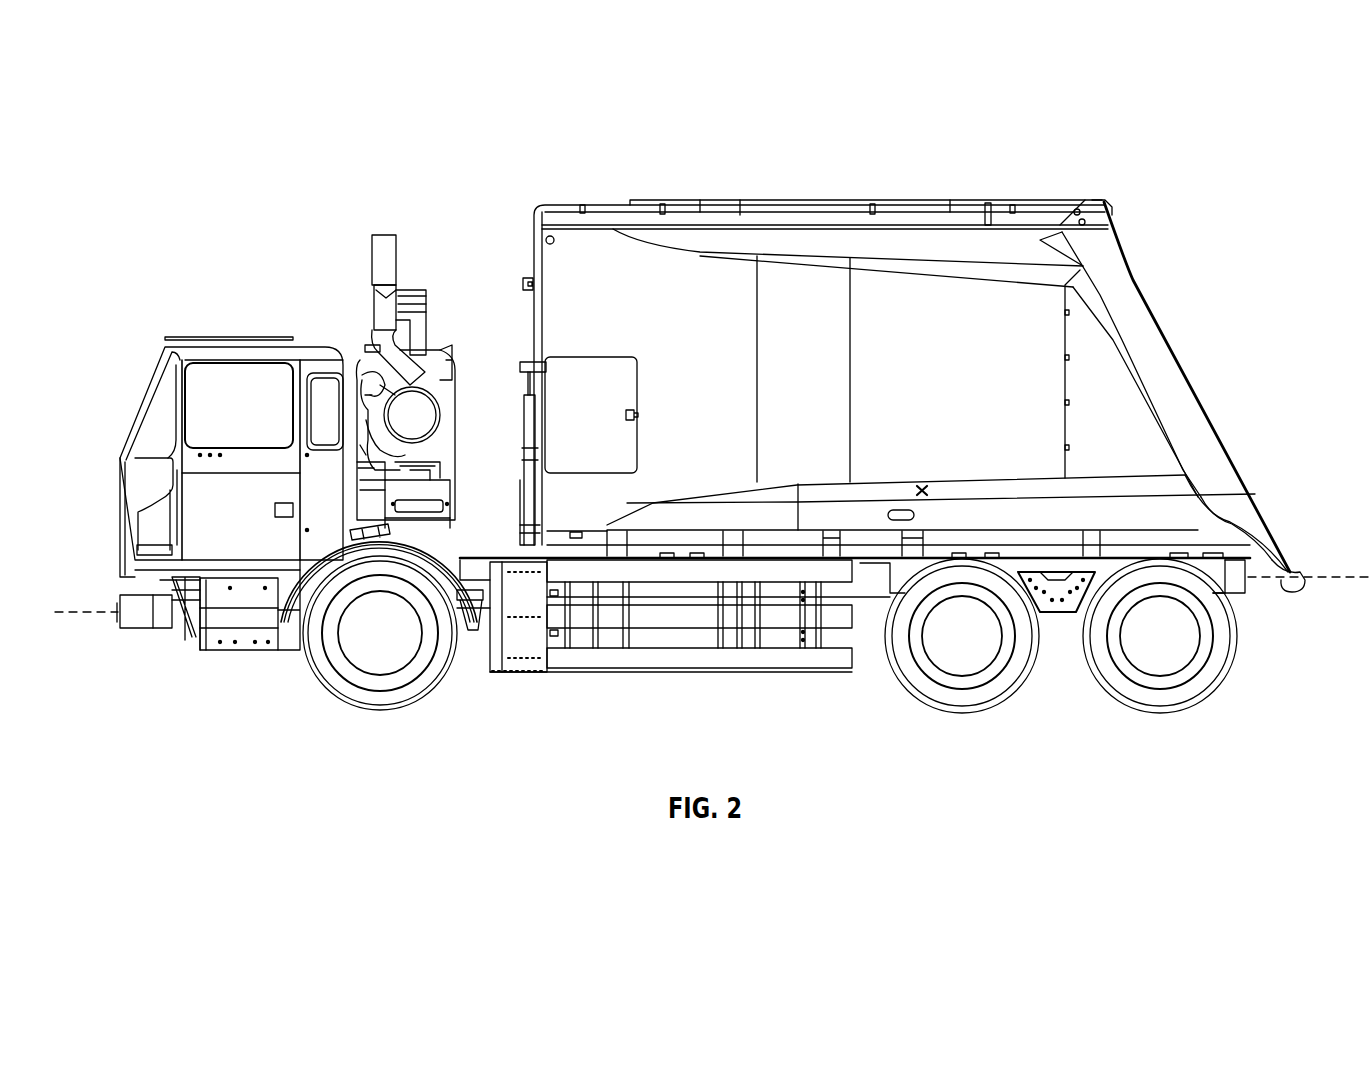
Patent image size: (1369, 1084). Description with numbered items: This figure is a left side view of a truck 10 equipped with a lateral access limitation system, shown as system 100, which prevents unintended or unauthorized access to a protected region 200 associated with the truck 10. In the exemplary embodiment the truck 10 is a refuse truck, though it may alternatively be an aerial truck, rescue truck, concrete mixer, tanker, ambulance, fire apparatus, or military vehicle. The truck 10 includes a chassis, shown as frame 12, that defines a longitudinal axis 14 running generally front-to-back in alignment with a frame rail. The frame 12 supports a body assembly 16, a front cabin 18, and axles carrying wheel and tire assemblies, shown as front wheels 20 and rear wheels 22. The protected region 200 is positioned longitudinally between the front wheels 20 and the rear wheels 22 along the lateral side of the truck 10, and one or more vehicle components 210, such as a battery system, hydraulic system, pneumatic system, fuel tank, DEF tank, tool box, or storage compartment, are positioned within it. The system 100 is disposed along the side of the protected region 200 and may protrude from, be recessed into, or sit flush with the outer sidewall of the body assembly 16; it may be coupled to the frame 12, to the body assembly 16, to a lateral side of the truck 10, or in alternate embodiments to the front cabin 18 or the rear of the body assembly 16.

The truck 10 is at (204, 226).
The frame 12 is at (1247, 598).
The longitudinal axis 14 is at (90, 612).
The body assembly 16 is at (556, 262).
The front cabin 18 is at (270, 348).
The front wheels 20 is at (330, 677).
The rear wheels 22 is at (998, 684).
The lateral access limitation system 100 is at (504, 686).
The protected region 200 is at (848, 637).
The vehicle components 210 is at (698, 637).